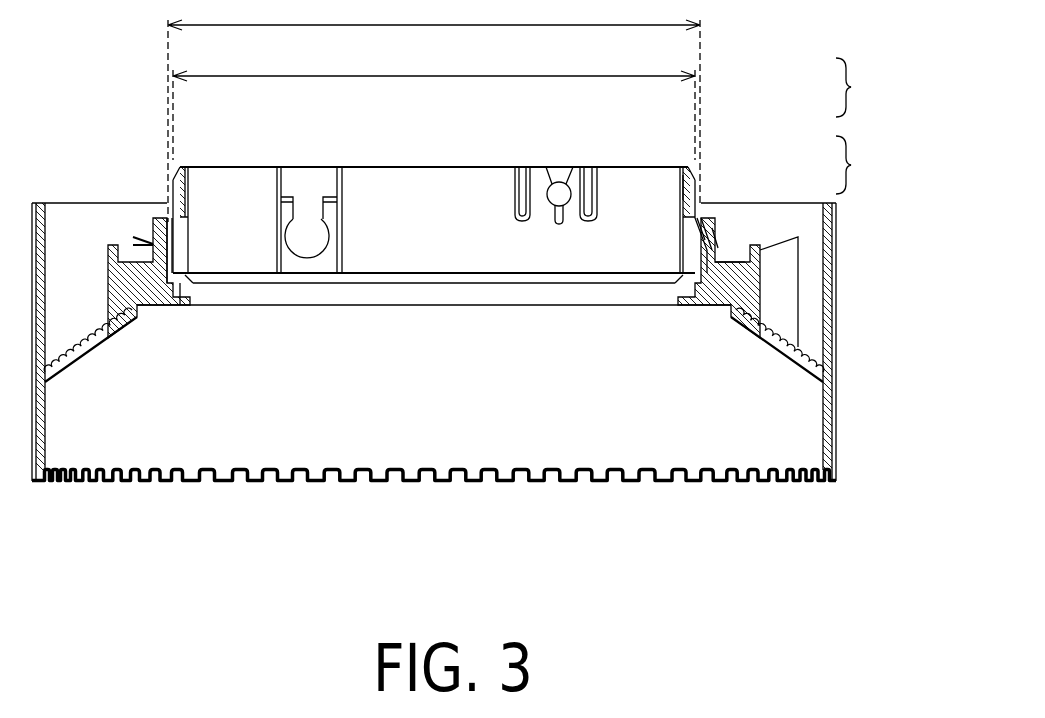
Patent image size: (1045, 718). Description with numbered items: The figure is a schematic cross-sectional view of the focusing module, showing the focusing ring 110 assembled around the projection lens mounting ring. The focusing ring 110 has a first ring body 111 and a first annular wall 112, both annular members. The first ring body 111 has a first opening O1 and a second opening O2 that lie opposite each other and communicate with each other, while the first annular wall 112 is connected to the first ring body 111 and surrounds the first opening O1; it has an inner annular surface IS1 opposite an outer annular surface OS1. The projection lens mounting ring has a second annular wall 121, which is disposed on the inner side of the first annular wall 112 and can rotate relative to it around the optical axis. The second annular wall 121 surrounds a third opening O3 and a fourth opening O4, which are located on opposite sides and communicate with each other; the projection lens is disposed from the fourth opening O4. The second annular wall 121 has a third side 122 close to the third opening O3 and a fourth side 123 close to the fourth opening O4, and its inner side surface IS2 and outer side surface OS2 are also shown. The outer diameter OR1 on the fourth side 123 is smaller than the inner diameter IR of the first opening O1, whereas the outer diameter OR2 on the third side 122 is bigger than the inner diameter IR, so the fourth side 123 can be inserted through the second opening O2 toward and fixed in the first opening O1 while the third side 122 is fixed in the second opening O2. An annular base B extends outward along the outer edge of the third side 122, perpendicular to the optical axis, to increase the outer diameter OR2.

The focusing ring 110 is at (827, 400).
The first ring body 111 is at (835, 367).
The first annular wall 112 is at (500, 237).
The second annular wall 121 is at (533, 165).
The third side 122 is at (727, 288).
The fourth side 123 is at (247, 166).
The annular base B is at (143, 287).
The first opening O1 is at (163, 210).
The second opening O2 is at (253, 486).
The third opening O3 is at (183, 287).
The fourth opening O4 is at (370, 166).
The inner annular surface IS1 is at (712, 232).
The outer annular surface OS1 is at (720, 254).
The inner side surface IS2 is at (693, 185).
The outer side surface OS2 is at (703, 193).
The inner diameter IR is at (434, 111).
The outer diameter OR1 is at (434, 102).
The outer diameter OR2 is at (433, 307).